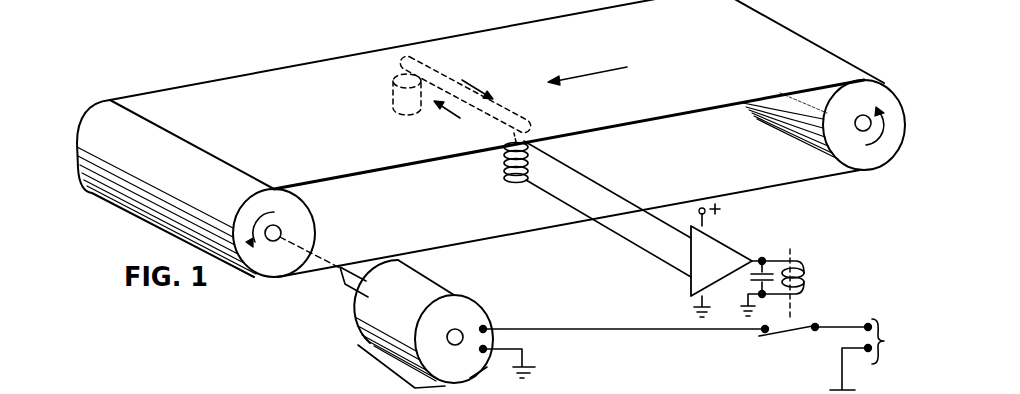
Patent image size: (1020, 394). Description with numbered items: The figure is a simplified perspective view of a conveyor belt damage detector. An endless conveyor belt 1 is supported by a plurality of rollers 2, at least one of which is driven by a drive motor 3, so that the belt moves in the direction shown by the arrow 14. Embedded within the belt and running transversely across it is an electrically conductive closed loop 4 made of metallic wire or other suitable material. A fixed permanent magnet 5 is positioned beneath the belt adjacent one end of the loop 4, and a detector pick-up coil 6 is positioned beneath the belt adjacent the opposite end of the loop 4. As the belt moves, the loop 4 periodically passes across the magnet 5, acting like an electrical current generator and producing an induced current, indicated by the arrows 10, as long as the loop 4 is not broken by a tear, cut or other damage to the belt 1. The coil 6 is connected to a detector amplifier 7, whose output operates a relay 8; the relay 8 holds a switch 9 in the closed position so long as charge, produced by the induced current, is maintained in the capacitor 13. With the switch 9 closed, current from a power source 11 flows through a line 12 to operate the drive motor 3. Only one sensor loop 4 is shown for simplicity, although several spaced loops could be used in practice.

The endless conveyor belt 1 is at (307, 63).
The rollers 2 is at (262, 273).
The drive motor 3 is at (446, 288).
The electrically conductive closed loop 4 is at (412, 57).
The fixed permanent magnet 5 is at (390, 96).
The detector pick-up coil 6 is at (504, 173).
The detector amplifier 7 is at (731, 258).
The relay 8 is at (806, 274).
The switch 9 is at (790, 331).
The arrows 10 is at (462, 80).
The power source 11 is at (866, 354).
The line 12 is at (585, 329).
The capacitor 13 is at (751, 294).
The arrow 14 is at (593, 73).